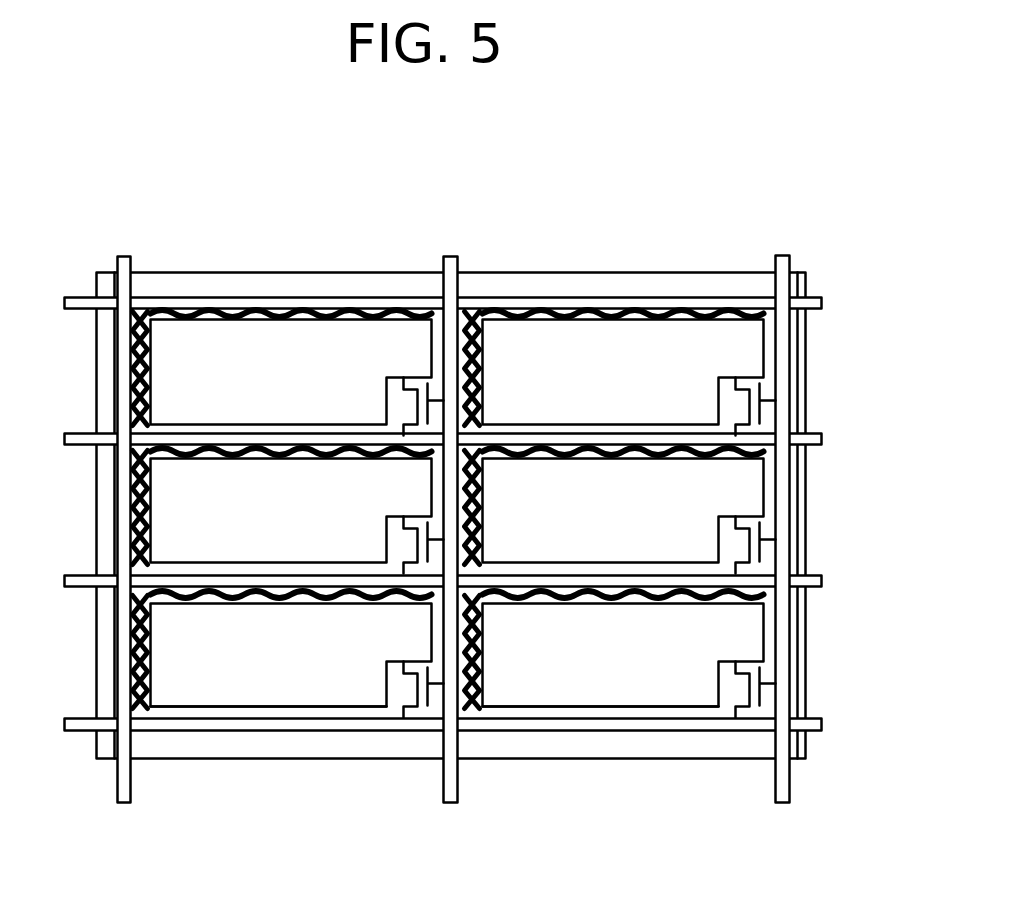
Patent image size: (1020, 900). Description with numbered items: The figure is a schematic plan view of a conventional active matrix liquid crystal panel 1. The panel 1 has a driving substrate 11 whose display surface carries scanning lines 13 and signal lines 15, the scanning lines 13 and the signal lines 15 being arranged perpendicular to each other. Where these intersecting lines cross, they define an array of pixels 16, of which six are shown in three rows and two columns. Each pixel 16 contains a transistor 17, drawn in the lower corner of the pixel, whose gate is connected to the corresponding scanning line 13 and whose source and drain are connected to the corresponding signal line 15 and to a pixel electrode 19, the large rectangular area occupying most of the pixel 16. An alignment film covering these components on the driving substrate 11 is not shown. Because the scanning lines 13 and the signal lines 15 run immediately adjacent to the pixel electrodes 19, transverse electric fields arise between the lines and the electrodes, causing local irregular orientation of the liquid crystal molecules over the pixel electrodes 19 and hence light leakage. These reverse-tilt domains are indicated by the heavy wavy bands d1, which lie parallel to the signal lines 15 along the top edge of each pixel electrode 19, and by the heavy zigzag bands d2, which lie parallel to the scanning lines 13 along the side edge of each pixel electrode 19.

The liquid crystal panel 1 is at (806, 203).
The driving substrate 11 is at (806, 278).
The scanning line 13 is at (116, 263).
The signal line 15 is at (823, 434).
The pixel 16 is at (186, 704).
The transistor 17 is at (400, 700).
The pixel electrode 19 is at (252, 709).
The reverse-tilt domain parallel to signal line d1 is at (213, 312).
The reverse-tilt domain parallel to scanning line d2 is at (132, 368).